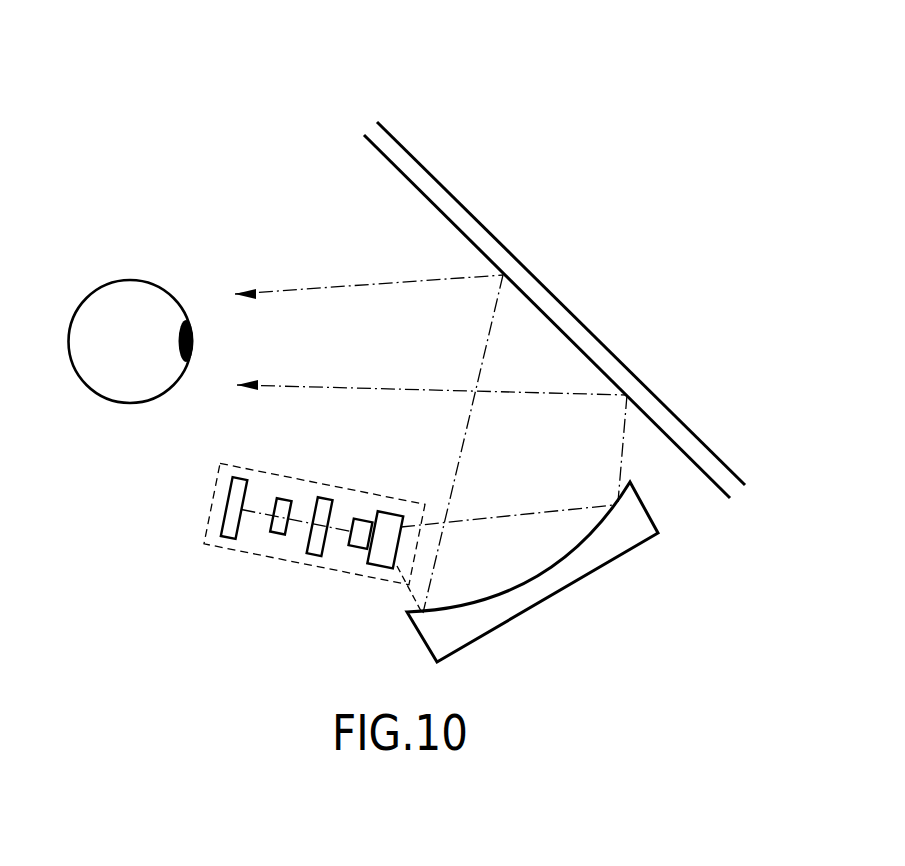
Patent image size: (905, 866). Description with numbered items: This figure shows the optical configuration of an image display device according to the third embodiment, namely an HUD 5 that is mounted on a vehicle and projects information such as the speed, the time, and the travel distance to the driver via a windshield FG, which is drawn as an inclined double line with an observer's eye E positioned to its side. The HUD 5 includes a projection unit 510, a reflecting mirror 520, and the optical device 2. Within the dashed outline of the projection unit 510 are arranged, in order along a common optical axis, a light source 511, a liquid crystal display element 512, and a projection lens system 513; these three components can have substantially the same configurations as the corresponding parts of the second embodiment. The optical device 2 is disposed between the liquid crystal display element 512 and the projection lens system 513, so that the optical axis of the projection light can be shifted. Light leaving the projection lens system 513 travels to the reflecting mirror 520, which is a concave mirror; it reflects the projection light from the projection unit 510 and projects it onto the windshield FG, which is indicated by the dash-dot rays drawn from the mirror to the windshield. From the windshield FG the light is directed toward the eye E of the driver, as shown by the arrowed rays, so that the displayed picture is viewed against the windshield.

The HUD (image display device) 5 is at (485, 130).
The windshield FG is at (527, 280).
The eye of observer E is at (124, 298).
The optical device 2 is at (327, 497).
The projection unit 510 is at (212, 497).
The light source 511 is at (228, 537).
The liquid crystal display element 512 is at (278, 537).
The projection lens system 513 is at (382, 565).
The reflecting mirror 520 is at (527, 600).